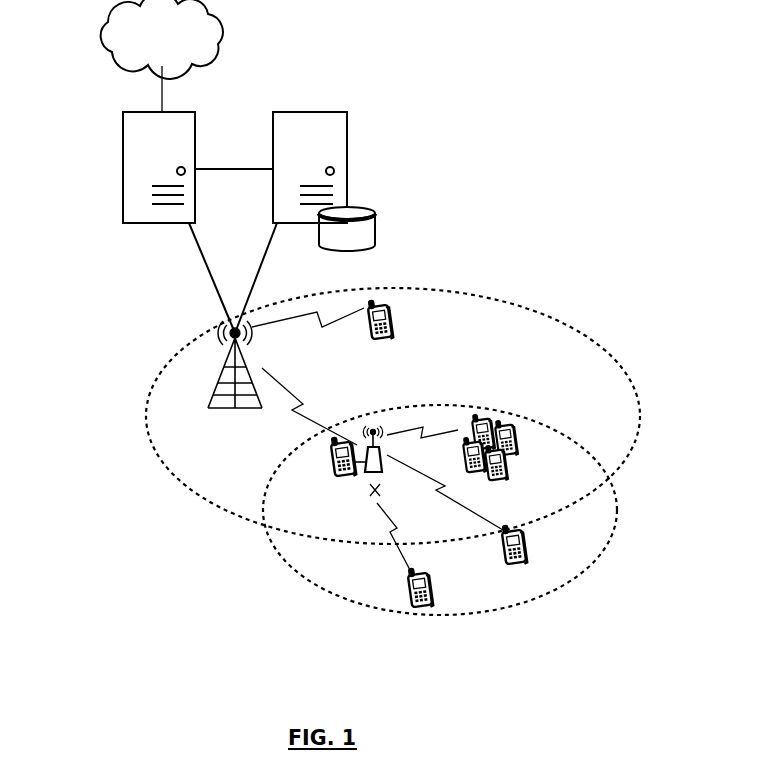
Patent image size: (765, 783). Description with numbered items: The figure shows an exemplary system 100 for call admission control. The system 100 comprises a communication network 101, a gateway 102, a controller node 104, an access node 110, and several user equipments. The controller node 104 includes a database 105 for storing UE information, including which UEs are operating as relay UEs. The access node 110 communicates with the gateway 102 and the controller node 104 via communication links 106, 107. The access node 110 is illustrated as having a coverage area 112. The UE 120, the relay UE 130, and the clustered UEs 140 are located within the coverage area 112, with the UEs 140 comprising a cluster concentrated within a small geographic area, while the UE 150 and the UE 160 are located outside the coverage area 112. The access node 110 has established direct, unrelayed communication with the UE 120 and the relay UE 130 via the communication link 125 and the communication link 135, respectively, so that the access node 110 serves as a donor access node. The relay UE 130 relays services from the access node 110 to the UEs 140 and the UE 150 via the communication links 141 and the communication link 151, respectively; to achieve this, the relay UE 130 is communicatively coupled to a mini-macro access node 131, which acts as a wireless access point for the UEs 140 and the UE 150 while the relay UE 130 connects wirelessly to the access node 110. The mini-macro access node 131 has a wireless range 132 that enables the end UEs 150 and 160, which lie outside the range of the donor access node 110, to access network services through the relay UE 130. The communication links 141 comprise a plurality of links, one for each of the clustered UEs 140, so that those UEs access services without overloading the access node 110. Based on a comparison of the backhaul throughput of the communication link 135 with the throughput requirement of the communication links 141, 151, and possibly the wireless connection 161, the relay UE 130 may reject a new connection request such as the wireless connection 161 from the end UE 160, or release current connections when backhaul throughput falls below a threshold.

The system 100 is at (358, 72).
The communication network 101 is at (181, 41).
The gateway 102 is at (122, 133).
The controller node 104 is at (347, 130).
The database 105 is at (375, 212).
The communication link 106 is at (193, 247).
The communication link 107 is at (270, 242).
The access node 110 is at (217, 388).
The coverage area 112 is at (208, 502).
The UE 120 is at (394, 313).
The communication link 125 is at (290, 326).
The relay UE 130 is at (347, 476).
The mini-macro access node 131 is at (367, 476).
The wireless range 132 is at (287, 563).
The communication link 135 is at (312, 407).
The UEs 140 is at (510, 421).
The communication links 141 is at (405, 432).
The UE 150 is at (523, 562).
The communication link 151 is at (470, 510).
The UE 160 is at (422, 607).
The wireless connection 161 is at (392, 530).